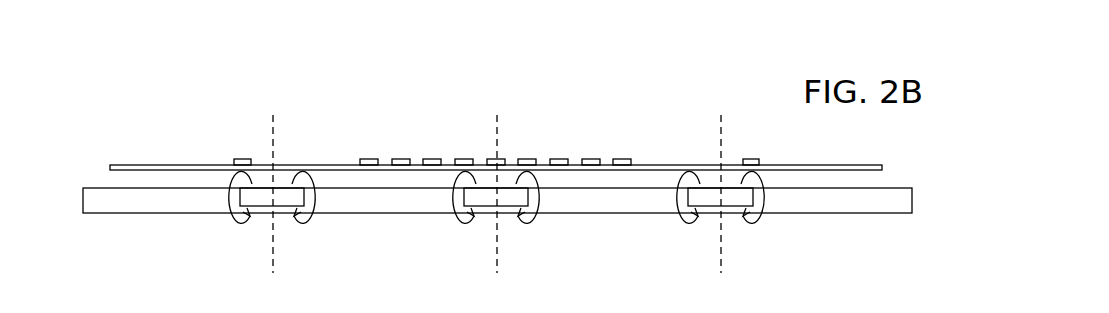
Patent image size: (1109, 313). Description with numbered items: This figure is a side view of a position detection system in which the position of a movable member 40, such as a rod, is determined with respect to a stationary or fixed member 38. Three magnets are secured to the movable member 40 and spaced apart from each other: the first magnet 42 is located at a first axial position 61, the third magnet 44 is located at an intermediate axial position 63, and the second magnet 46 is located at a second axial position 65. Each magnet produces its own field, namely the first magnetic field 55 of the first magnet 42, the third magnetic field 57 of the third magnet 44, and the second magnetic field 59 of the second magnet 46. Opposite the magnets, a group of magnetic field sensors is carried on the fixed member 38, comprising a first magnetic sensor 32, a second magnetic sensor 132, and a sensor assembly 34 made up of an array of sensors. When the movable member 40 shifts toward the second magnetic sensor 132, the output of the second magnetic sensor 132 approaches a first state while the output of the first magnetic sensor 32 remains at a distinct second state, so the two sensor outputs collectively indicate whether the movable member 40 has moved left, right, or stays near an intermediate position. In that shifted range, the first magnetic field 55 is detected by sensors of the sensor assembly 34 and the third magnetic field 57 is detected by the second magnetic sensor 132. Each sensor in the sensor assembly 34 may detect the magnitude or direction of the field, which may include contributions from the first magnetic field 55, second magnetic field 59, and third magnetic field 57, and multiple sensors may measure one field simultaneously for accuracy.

The movable member 40 is at (83, 188).
The fixed member 38 is at (832, 165).
The first magnetic sensor 32 is at (243, 159).
The second magnetic sensor 132 is at (751, 159).
The sensor assembly 34 is at (432, 130).
The first magnet 42 is at (262, 200).
The third magnet 44 is at (487, 195).
The second magnet 46 is at (708, 195).
The first magnetic field 55 is at (223, 199).
The third magnetic field 57 is at (447, 207).
The second magnetic field 59 is at (675, 200).
The first axial position 61 is at (273, 206).
The intermediate axial position 63 is at (497, 206).
The second axial position 65 is at (721, 206).